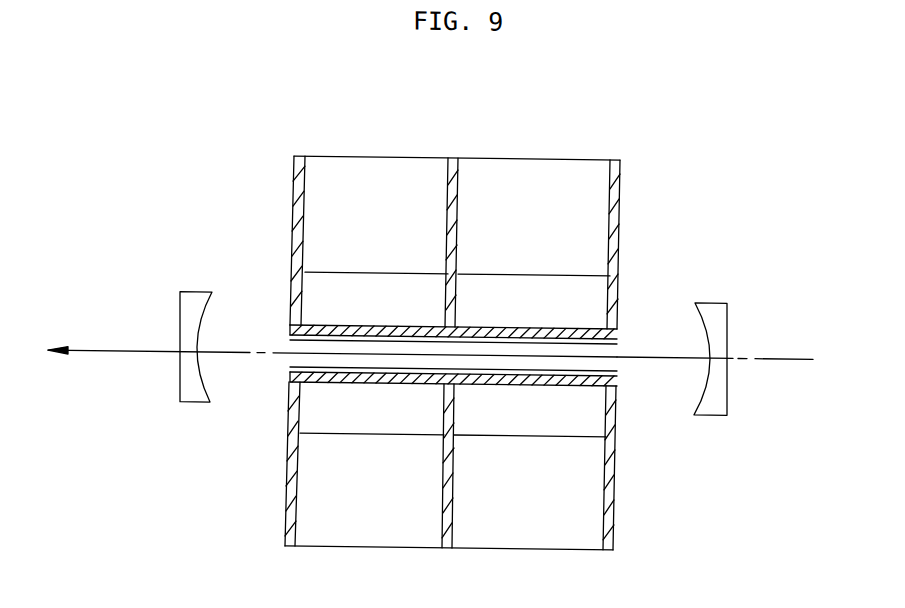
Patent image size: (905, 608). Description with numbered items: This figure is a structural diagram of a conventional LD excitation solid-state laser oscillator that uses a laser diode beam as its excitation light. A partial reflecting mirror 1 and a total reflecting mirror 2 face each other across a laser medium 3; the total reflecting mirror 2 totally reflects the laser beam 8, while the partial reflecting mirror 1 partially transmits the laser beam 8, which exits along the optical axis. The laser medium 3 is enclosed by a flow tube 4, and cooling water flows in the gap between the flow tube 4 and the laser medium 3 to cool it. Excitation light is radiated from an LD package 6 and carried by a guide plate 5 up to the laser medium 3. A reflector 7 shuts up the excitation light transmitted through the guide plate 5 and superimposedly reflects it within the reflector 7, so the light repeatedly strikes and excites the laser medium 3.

The partial reflecting mirror 1 is at (193, 293).
The total reflecting mirror 2 is at (706, 298).
The laser medium 3 is at (615, 344).
The flow tube 4 is at (615, 327).
The guide plate 5 is at (600, 294).
The LD package 6 is at (603, 213).
The reflector 7 is at (620, 157).
The laser beam 8 is at (118, 352).